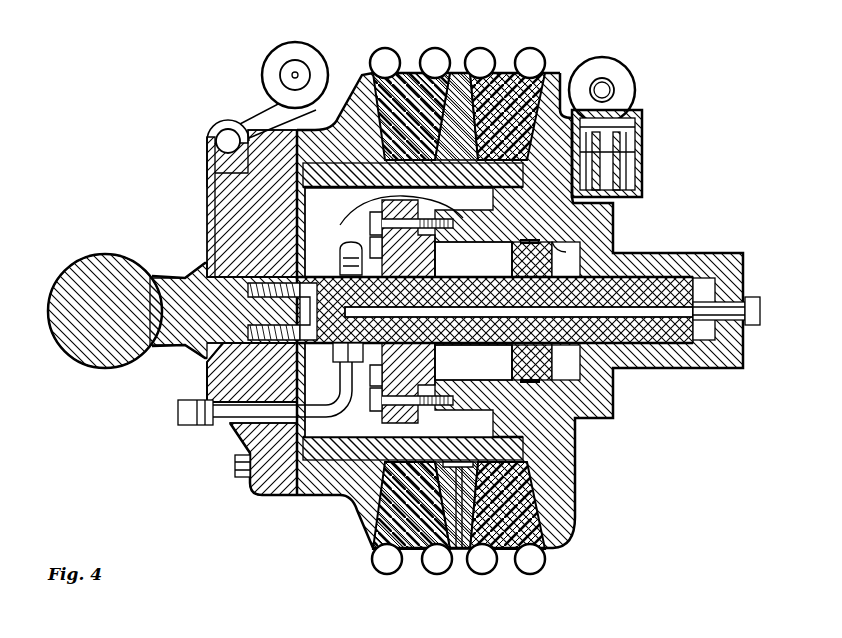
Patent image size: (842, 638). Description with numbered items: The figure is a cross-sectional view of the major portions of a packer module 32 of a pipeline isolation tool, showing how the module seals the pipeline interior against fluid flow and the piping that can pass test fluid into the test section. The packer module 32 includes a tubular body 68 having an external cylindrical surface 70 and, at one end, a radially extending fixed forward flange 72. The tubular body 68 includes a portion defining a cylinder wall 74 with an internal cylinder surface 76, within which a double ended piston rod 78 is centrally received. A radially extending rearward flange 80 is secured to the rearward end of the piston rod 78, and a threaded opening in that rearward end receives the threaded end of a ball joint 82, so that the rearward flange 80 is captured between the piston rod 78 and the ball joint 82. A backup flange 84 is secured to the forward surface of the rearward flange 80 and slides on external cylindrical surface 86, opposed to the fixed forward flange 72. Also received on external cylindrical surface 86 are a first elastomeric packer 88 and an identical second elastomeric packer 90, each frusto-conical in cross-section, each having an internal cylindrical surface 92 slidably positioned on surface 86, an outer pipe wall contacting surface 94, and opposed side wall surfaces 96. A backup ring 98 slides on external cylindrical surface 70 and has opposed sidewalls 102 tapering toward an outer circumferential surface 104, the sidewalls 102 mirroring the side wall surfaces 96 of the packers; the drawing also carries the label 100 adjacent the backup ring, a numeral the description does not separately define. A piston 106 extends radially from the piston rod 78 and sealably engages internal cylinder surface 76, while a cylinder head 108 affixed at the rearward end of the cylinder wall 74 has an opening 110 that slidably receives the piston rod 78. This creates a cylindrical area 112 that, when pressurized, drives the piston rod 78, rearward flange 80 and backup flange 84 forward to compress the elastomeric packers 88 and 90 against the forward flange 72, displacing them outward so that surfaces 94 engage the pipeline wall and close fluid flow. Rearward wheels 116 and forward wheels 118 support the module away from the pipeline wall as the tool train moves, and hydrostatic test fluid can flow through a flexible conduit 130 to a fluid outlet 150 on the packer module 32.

The packer module 32 is at (575, 55).
The tubular body 68 is at (313, 173).
The external cylindrical surface 70 is at (262, 108).
The fixed forward flange 72 is at (598, 122).
The cylinder wall 74 is at (345, 222).
The internal cylinder surface 76 is at (582, 245).
The piston rod 78 is at (487, 333).
The rearward flange 80 is at (243, 218).
The ball joint 82 is at (90, 272).
The backup flange 84 is at (350, 122).
The external cylindrical surface 86 is at (346, 188).
The first elastomeric packer 88 is at (385, 85).
The second elastomeric packer 90 is at (522, 58).
The internal cylindrical surface 92 is at (514, 179).
The outer pipe wall contacting surface 94 is at (507, 47).
The side wall surfaces 96 is at (460, 68).
The backup ring 98 is at (430, 497).
The lower outer race 100 is at (535, 483).
The sidewalls 102 is at (508, 547).
The outer circumferential surface 104 is at (460, 549).
The piston 106 is at (537, 367).
The cylinder head 108 is at (425, 262).
The opening 110 is at (213, 363).
The cylindrical area 112 is at (545, 430).
The rearward wheels 116 is at (275, 60).
The forward wheels 118 is at (608, 70).
The flexible conduit 130 is at (230, 413).
The fluid outlet 150 is at (753, 300).